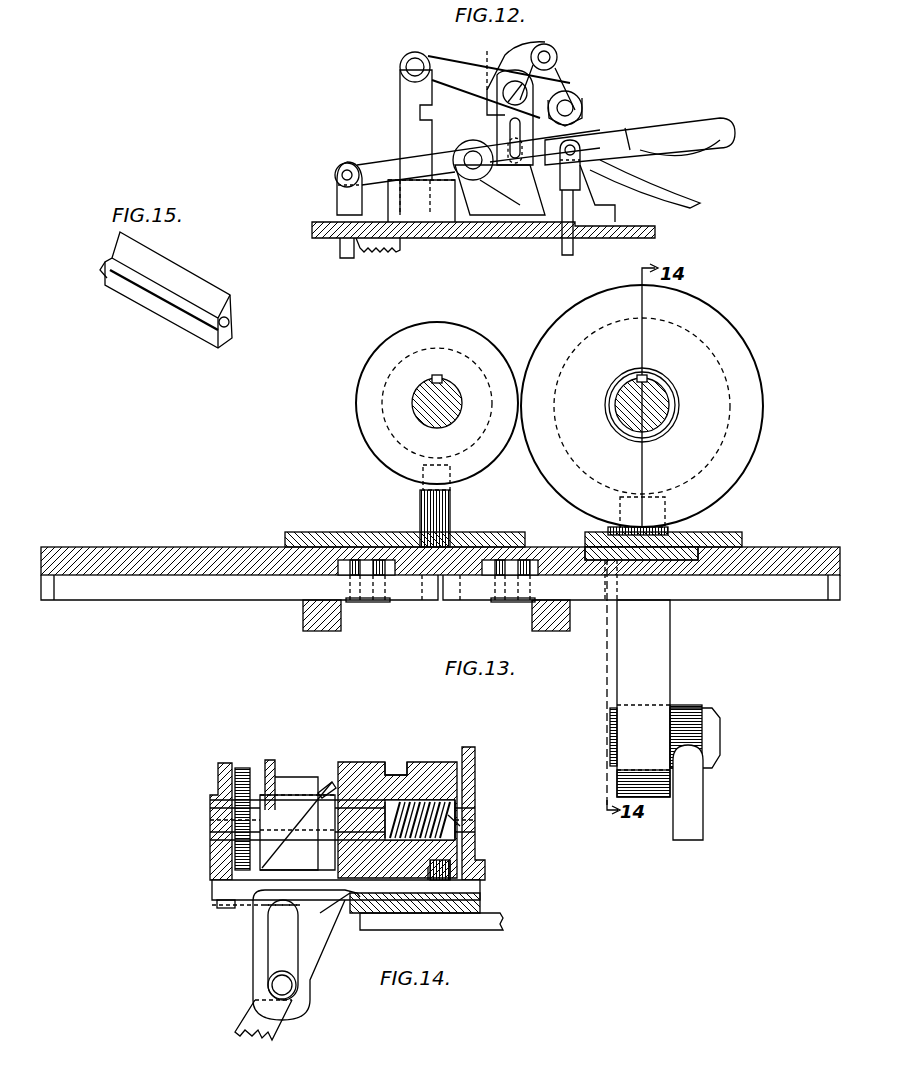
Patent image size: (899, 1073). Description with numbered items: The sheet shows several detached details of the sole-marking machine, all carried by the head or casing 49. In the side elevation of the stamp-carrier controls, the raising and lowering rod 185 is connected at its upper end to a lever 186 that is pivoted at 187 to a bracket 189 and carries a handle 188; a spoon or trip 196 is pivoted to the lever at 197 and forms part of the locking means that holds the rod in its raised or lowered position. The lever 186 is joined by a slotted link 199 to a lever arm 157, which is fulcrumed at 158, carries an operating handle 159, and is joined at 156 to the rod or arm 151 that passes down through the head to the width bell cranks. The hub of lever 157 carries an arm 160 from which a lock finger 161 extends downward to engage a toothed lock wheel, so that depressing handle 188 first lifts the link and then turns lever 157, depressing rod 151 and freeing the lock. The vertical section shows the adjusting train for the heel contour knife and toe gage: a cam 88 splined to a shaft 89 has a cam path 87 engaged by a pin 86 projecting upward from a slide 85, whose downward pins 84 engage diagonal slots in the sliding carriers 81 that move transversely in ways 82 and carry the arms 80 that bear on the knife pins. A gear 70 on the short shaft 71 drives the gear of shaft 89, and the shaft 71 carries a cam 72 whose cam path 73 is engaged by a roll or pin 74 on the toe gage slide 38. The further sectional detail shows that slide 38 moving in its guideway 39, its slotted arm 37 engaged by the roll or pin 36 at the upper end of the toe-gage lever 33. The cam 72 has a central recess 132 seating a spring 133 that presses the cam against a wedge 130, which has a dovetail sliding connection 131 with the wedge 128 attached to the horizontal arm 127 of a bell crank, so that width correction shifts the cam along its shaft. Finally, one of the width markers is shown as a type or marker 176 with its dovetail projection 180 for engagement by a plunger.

In FIG. 12, the head 49 is at (318, 224).
In FIG. 13, the head 49 is at (206, 547).
In FIG. 14, the head 49 is at (218, 768).
In FIG. 12, the raising and lowering rod 185 is at (400, 94).
In FIG. 12, the lever 186 is at (470, 50).
In FIG. 12, the slotted link 199 is at (482, 62).
In FIG. 12, the pivot 197 is at (548, 55).
In FIG. 12, the pivot 187 is at (566, 106).
In FIG. 12, the fulcrum 158 is at (470, 150).
In FIG. 12, the joint 156 is at (348, 162).
In FIG. 12, the lever arm 157 is at (450, 176).
In FIG. 12, the arm 160 is at (520, 190).
In FIG. 12, the operating handle 159 is at (700, 125).
In FIG. 12, the handle 188 is at (712, 152).
In FIG. 12, the spoon or trip 196 is at (700, 205).
In FIG. 12, the bracket 189 is at (590, 180).
In FIG. 12, the lock finger 161 is at (575, 245).
In FIG. 12, the rod or arm 151 is at (356, 256).
In FIG. 15, the type or marker 176 is at (175, 320).
In FIG. 15, the dovetail projection 180 is at (100, 275).
In FIG. 13, the sliding carrier 81 is at (248, 600).
In FIG. 14, the sliding carrier 81 is at (408, 930).
In FIG. 13, the ways 82 is at (45, 600).
In FIG. 13, the slide 85 is at (466, 547).
In FIG. 13, the slide 38 is at (675, 534).
In FIG. 14, the slide 38 is at (270, 895).
In FIG. 13, the guideway 39 is at (598, 547).
In FIG. 14, the guideway 39 is at (215, 893).
In FIG. 13, the pin 84 is at (366, 580).
In FIG. 13, the arm 80 is at (328, 631).
In FIG. 14, the arm 80 is at (460, 930).
In FIG. 13, the pin 86 is at (420, 496).
In FIG. 13, the cam path 87 is at (370, 392).
In FIG. 13, the cam 88 is at (420, 365).
In FIG. 13, the shaft 89 is at (448, 383).
In FIG. 13, the cam 72 is at (715, 333).
In FIG. 14, the cam 72 is at (448, 748).
In FIG. 13, the short shaft 71 is at (660, 408).
In FIG. 14, the short shaft 71 is at (212, 818).
In FIG. 13, the roll or pin 74 is at (648, 505).
In FIG. 14, the roll or pin 74 is at (460, 880).
In FIG. 13, the slotted arm 37 is at (660, 672).
In FIG. 14, the slotted arm 37 is at (255, 952).
In FIG. 13, the roll or pin 36 is at (612, 733).
In FIG. 14, the roll or pin 36 is at (268, 985).
In FIG. 13, the toe-gage lever 33 is at (703, 798).
In FIG. 14, the toe-gage lever 33 is at (275, 1035).
In FIG. 14, the gear 70 is at (258, 748).
In FIG. 14, the horizontal arm 127 is at (286, 732).
In FIG. 14, the wedge 128 is at (318, 748).
In FIG. 14, the dovetail sliding connection 131 is at (326, 785).
In FIG. 14, the wedge 130 is at (297, 826).
In FIG. 14, the cam path 73 is at (398, 768).
In FIG. 14, the central recess 132 is at (445, 800).
In FIG. 14, the spring 133 is at (458, 838).